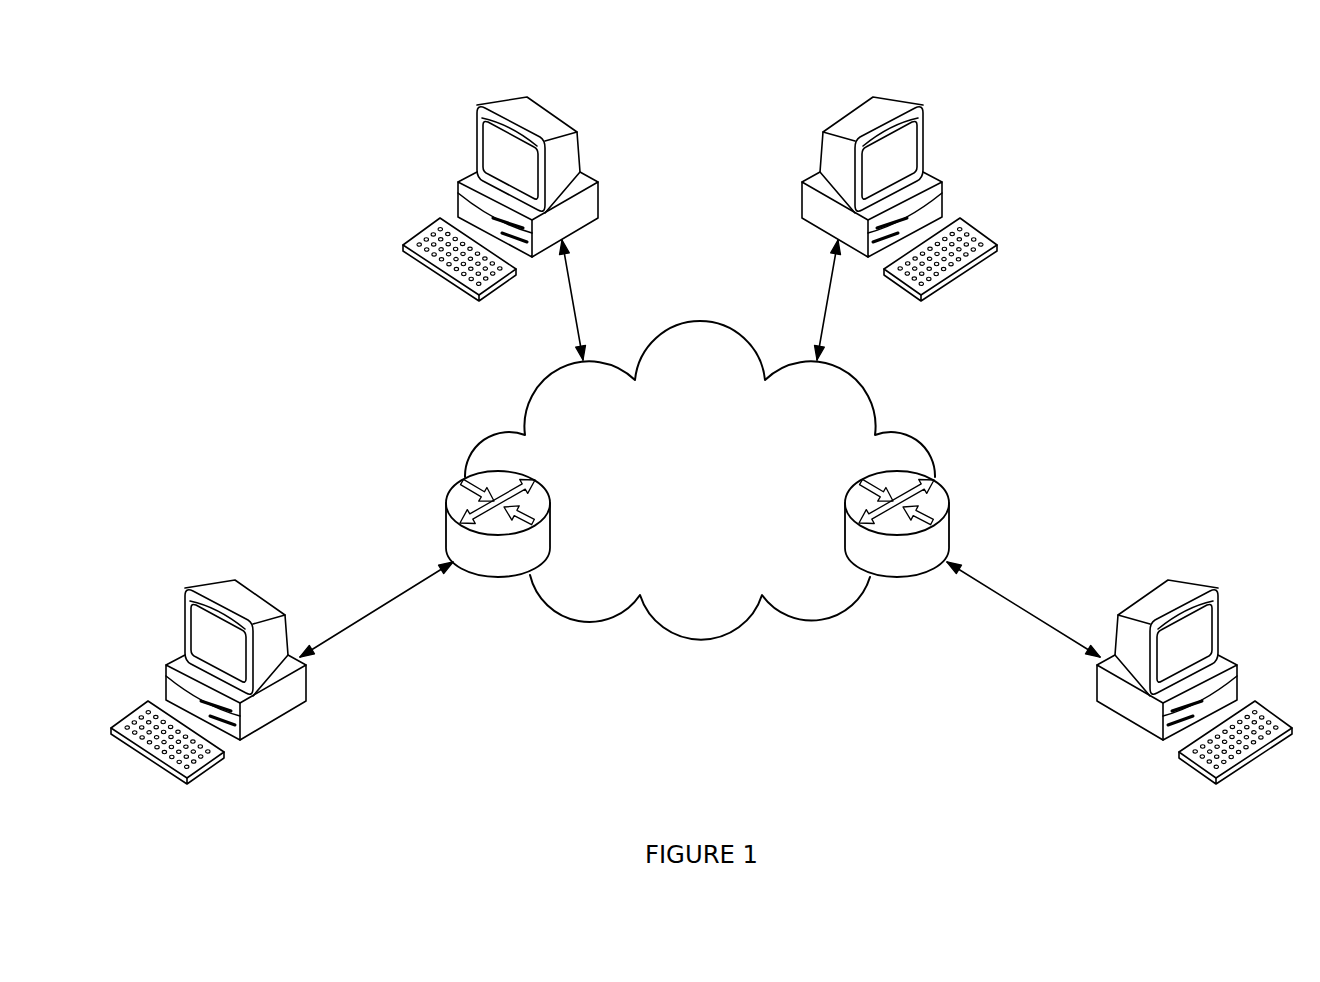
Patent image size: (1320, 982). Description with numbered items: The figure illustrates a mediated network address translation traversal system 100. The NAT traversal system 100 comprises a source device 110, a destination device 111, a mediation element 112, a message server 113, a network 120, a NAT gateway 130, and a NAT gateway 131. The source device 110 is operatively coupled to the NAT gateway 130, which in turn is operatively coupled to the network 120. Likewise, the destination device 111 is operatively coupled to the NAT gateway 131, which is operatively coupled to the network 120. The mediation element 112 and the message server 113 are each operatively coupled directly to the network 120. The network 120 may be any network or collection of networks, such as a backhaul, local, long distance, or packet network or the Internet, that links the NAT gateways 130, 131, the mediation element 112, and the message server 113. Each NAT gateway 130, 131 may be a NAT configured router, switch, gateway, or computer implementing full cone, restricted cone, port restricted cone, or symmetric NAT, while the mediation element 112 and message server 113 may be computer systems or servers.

The NAT traversal system 100 is at (228, 78).
The source device 110 is at (190, 586).
The destination device 111 is at (1210, 586).
The mediation element 112 is at (480, 105).
The message server 113 is at (920, 105).
The network 120 is at (724, 498).
The NAT gateway 130 is at (450, 492).
The NAT gateway 131 is at (947, 492).